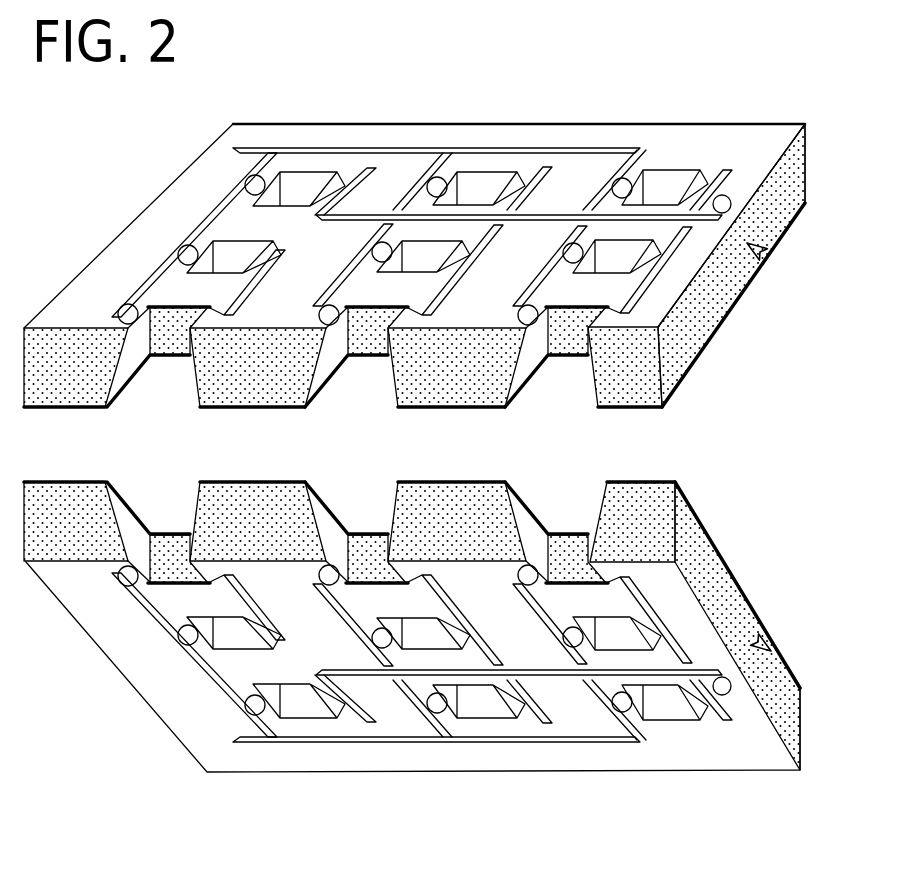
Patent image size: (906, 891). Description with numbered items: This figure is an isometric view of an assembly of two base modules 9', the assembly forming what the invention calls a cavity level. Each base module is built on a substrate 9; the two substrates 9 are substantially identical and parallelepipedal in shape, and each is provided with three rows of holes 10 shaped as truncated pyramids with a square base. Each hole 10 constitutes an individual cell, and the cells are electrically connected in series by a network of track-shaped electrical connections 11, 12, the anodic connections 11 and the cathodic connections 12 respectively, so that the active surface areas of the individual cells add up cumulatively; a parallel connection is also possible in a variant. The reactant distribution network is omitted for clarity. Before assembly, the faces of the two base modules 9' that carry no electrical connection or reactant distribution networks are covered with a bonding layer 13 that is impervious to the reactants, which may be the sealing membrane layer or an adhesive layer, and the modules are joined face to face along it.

The substrate 9 is at (414, 448).
The base module 9' is at (789, 447).
The hole 10 is at (300, 182).
The anodic electrical connection 11 is at (484, 150).
The cathodic electrical connection 12 is at (560, 213).
The bonding layer 13 is at (675, 387).